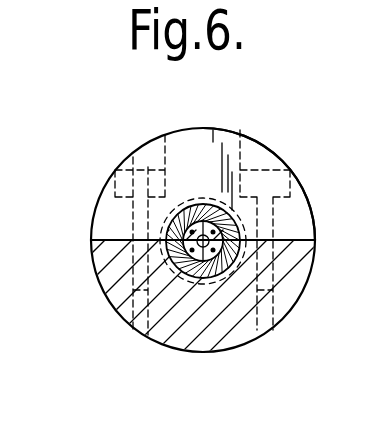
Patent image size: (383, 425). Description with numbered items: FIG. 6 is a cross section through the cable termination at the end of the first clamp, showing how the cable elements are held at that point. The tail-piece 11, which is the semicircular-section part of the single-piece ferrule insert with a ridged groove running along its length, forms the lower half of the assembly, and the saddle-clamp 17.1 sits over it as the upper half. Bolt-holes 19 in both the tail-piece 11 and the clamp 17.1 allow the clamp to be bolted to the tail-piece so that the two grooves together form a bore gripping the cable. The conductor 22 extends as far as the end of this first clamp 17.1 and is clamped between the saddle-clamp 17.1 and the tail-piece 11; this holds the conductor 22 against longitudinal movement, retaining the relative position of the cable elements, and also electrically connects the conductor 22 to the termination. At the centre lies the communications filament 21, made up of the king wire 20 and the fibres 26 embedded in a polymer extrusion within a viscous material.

The tail-piece 11 is at (243, 332).
The first clamp 17.1 is at (252, 146).
The bolt-holes 19 is at (132, 225).
The king wire 20 is at (190, 256).
The communications filament 21 is at (213, 270).
The conductor 22 is at (188, 203).
The fibres 26 is at (237, 252).